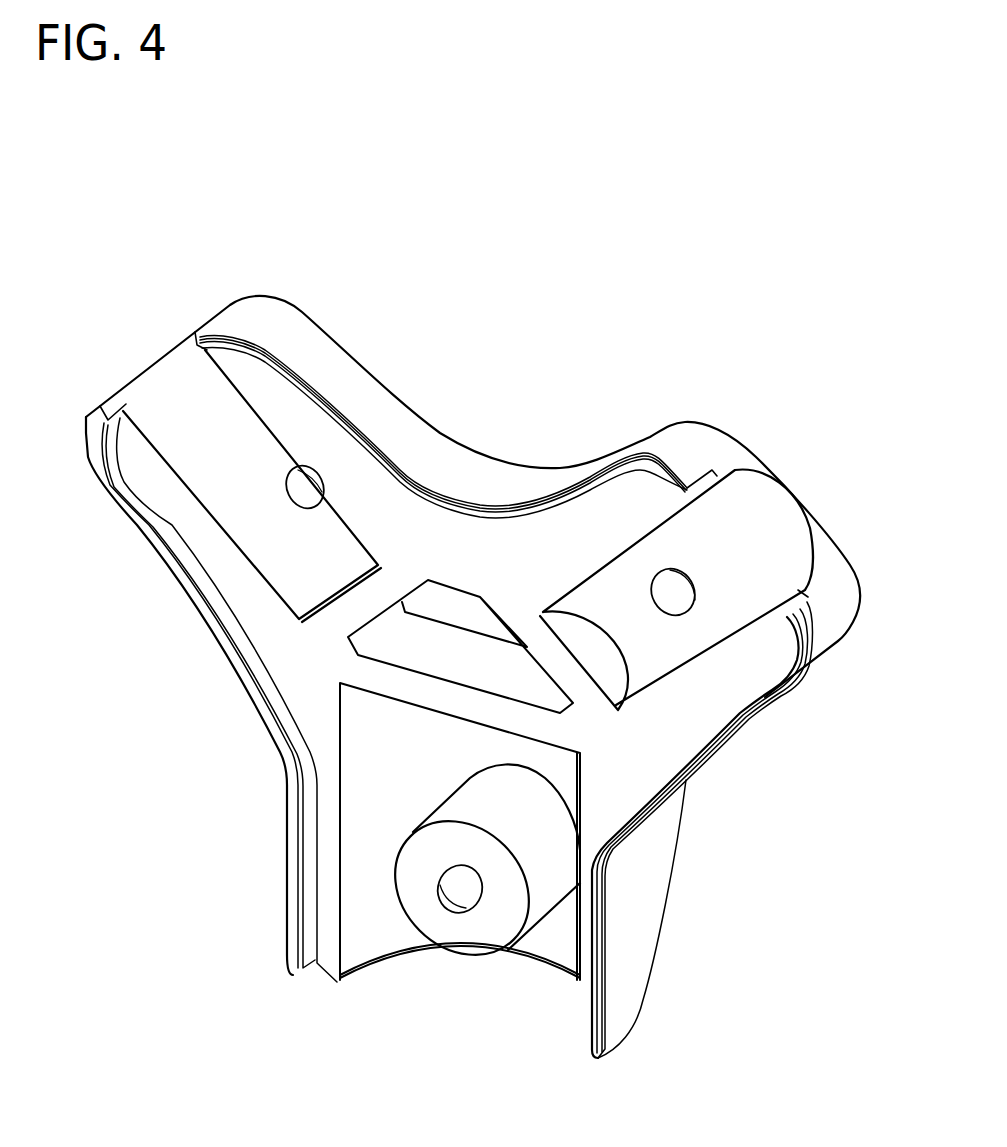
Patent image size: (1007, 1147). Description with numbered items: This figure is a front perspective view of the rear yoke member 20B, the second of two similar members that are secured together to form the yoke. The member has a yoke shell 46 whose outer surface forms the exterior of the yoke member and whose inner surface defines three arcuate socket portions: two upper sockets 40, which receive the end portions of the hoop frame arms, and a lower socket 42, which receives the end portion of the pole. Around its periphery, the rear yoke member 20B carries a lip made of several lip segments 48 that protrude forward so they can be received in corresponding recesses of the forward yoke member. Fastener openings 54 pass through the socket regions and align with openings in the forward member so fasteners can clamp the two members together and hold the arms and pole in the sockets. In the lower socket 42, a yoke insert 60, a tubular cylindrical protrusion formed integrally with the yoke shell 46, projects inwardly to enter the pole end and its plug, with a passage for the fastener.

The rear yoke member 20B is at (775, 252).
The upper sockets 40 is at (212, 420).
The lower socket 42 is at (396, 762).
The yoke shell 46 is at (603, 749).
The lip segments 48 is at (210, 613).
The fastener openings 54 is at (307, 497).
The yoke inserts 60 is at (542, 871).